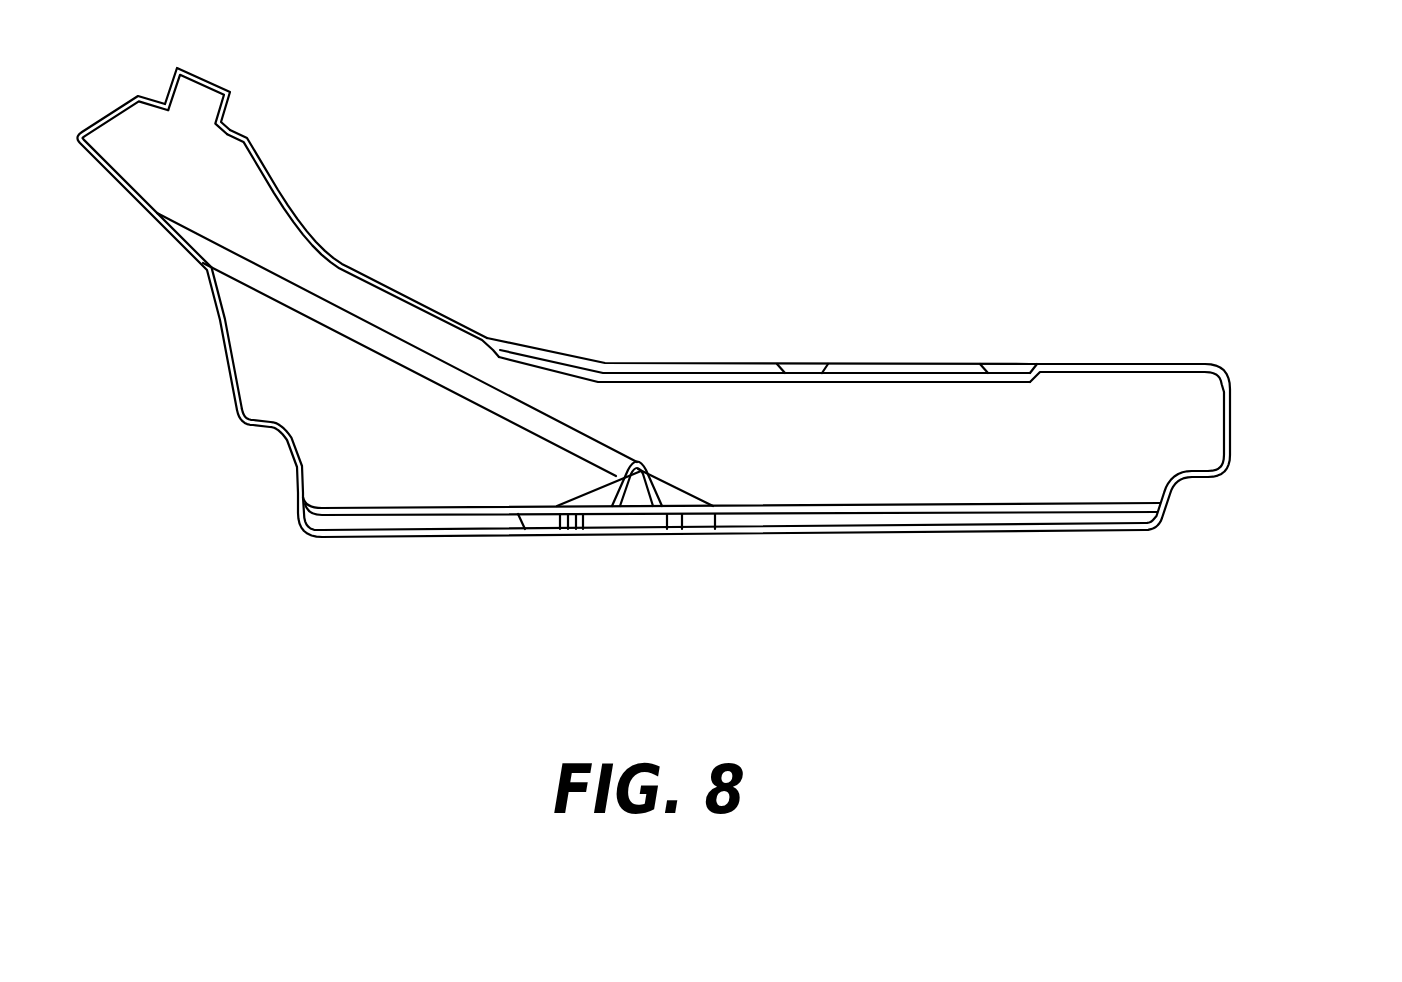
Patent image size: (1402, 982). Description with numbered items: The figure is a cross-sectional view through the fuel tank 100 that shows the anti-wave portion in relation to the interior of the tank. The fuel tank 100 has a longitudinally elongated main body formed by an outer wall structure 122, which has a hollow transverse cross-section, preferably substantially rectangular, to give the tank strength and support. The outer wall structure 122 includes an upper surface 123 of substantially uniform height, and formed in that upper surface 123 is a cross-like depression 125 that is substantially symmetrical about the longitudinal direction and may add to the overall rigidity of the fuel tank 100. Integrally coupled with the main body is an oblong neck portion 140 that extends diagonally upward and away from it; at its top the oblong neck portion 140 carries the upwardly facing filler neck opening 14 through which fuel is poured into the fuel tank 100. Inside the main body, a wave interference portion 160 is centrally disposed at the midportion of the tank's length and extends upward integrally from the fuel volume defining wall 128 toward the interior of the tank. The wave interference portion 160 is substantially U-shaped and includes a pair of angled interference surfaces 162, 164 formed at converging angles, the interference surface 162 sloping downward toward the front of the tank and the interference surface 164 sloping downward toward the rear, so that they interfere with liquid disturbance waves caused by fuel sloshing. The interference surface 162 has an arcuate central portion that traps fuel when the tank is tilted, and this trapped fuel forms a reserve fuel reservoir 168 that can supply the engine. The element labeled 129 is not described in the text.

The filler neck opening 14 is at (229, 108).
The oblong neck portion 140 is at (292, 208).
The outer wall structure 122 is at (607, 364).
The cross-like depression 125 is at (817, 367).
The upper surface 123 is at (1062, 362).
The end wall 129 is at (1178, 428).
The fuel volume defining wall 128 is at (1173, 503).
The fuel tank 100 is at (988, 462).
The wave interference portion 160 is at (645, 466).
The angled interference surface 162 is at (602, 493).
The angled interference surface 164 is at (665, 497).
The reserve fuel reservoir 168 is at (596, 497).